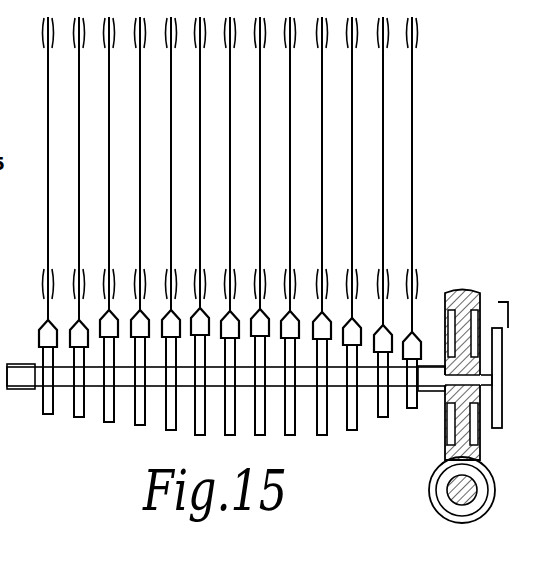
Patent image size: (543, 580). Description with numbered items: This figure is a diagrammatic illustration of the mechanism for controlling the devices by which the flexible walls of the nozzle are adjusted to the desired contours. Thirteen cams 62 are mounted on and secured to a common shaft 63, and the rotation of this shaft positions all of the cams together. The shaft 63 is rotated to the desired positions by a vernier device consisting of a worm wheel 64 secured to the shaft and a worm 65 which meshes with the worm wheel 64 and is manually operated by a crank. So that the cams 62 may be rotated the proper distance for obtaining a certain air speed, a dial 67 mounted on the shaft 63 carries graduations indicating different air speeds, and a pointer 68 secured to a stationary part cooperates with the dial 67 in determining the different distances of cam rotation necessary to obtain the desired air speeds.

The cams 62 is at (78, 413).
The common shaft 63 is at (158, 382).
The worm wheel 64 is at (455, 293).
The worm 65 is at (489, 500).
The dial 67 is at (502, 425).
The pointer 68 is at (516, 286).